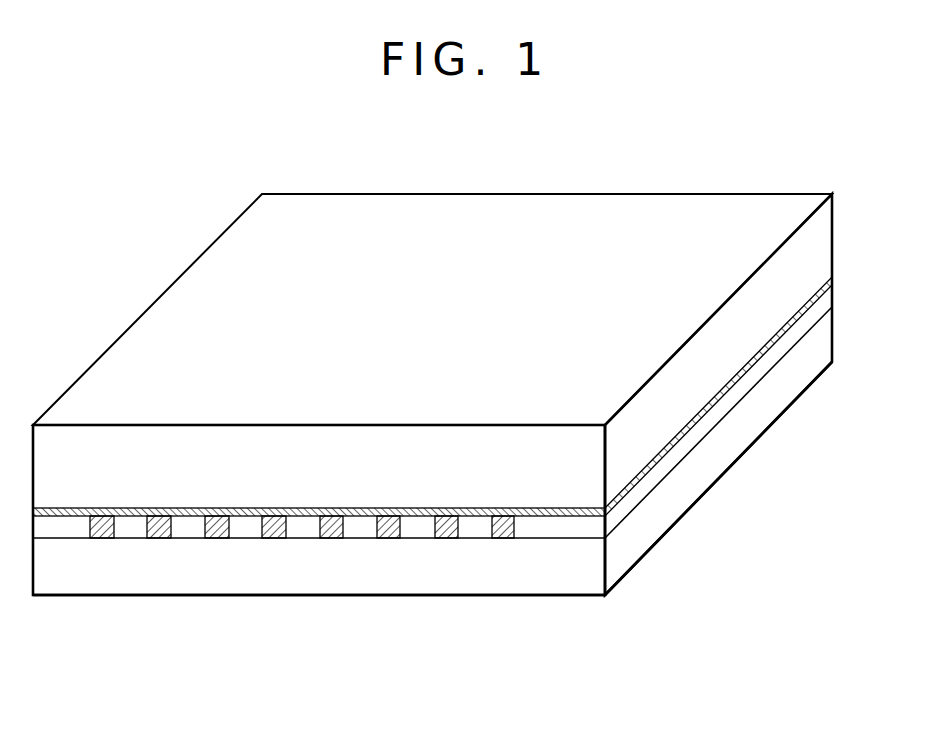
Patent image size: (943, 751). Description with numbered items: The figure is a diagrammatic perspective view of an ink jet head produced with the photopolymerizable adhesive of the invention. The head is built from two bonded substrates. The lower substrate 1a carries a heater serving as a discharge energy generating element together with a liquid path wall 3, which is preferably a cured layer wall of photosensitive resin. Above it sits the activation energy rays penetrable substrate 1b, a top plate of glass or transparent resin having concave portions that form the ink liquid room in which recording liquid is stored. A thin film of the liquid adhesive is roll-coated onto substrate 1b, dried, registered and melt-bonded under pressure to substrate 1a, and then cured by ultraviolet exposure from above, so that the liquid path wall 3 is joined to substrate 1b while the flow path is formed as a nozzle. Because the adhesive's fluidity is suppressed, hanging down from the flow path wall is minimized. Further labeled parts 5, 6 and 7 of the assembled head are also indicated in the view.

The substrate 1a is at (678, 503).
The activation energy rays penetrable substrate 1b is at (732, 357).
The liquid path wall 3 is at (192, 525).
The separation region 5 is at (298, 520).
The hatched electrode blocks 6 is at (447, 530).
The base substrate 7 is at (575, 578).